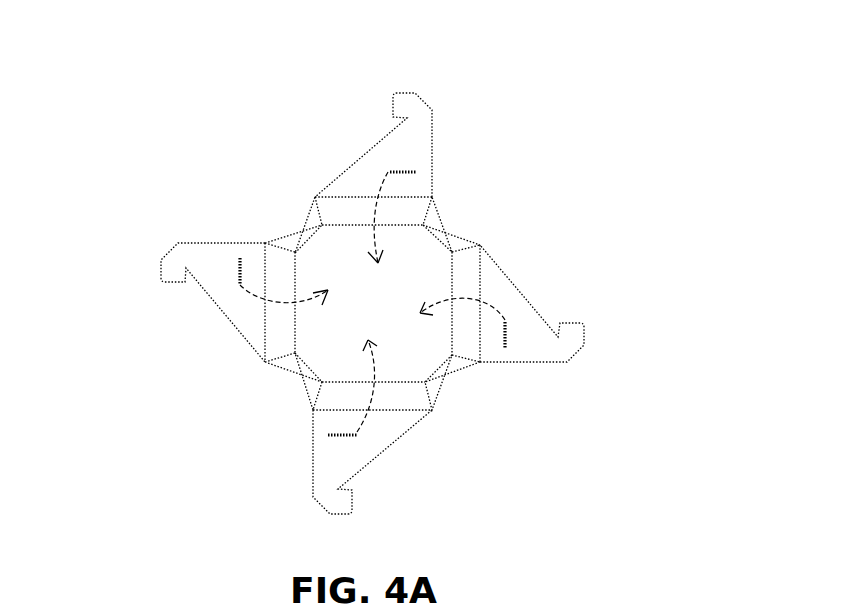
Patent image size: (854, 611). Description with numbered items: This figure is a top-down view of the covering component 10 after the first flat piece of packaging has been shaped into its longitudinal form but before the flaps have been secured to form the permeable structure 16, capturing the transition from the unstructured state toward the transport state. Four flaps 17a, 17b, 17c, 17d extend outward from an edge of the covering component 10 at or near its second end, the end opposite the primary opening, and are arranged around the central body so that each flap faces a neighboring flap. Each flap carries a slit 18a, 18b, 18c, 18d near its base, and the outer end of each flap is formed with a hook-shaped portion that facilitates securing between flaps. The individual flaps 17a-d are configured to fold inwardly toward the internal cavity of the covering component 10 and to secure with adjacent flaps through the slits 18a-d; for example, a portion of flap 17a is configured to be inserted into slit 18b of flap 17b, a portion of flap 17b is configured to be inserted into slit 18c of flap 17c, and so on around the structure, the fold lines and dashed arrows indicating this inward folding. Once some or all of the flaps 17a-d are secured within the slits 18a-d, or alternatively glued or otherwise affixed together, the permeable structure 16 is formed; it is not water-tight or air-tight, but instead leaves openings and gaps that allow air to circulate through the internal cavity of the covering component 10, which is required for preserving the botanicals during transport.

The covering component 10 is at (378, 274).
The permeable structure 16 is at (460, 243).
The flap 17a is at (435, 148).
The flap 17b is at (538, 367).
The flap 17c is at (390, 442).
The flap 17d is at (178, 243).
The slit 18a is at (420, 174).
The slit 18b is at (503, 350).
The slit 18c is at (337, 440).
The slit 18d is at (187, 235).